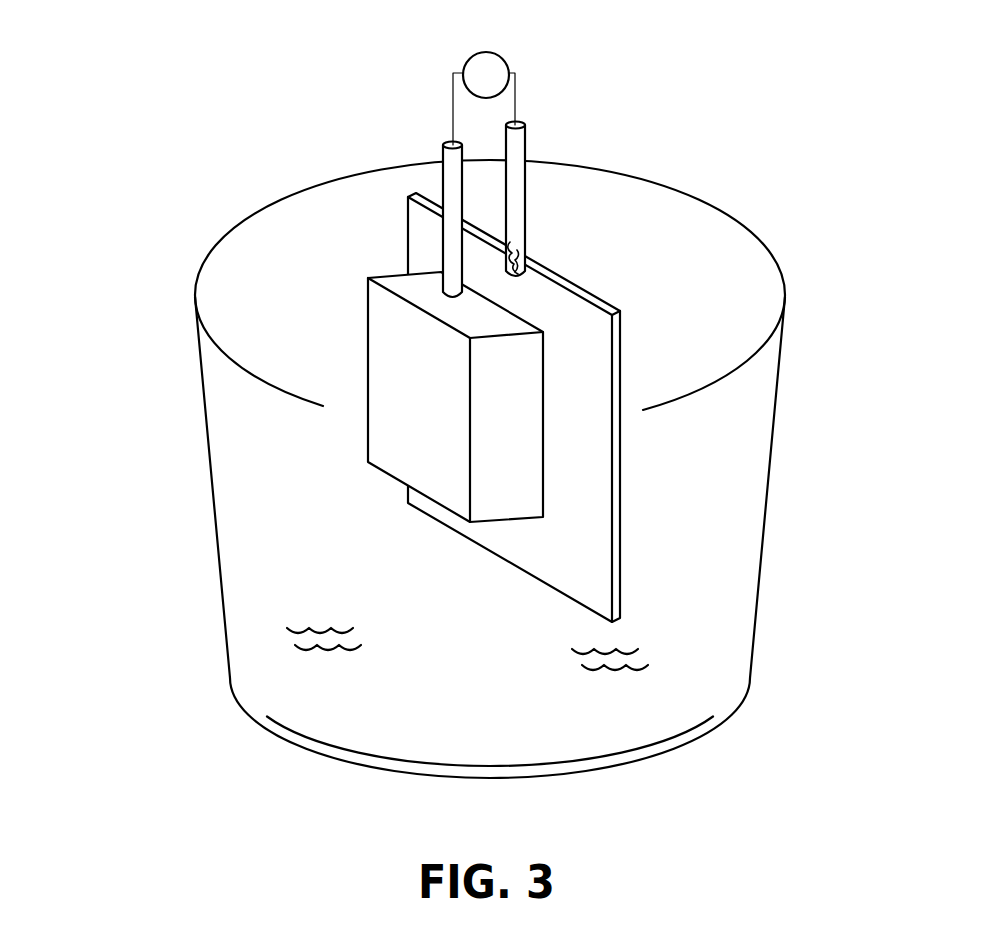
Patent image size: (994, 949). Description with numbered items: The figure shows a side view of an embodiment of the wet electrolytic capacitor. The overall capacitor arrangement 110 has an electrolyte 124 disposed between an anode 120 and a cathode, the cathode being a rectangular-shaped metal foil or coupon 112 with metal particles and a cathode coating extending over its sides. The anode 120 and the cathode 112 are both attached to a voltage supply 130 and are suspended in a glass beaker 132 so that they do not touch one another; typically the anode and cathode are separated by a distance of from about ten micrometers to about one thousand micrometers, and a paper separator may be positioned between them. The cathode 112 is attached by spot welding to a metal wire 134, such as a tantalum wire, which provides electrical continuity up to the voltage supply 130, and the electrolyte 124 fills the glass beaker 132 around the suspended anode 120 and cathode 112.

The electrochemical test system 110 is at (471, 399).
The electrode plate 112 is at (582, 320).
The anode 120 is at (382, 343).
The electrolyte 124 is at (303, 648).
The voltage supply 130 is at (507, 66).
The glass beaker 132 is at (768, 483).
The metal wire 134 is at (516, 152).